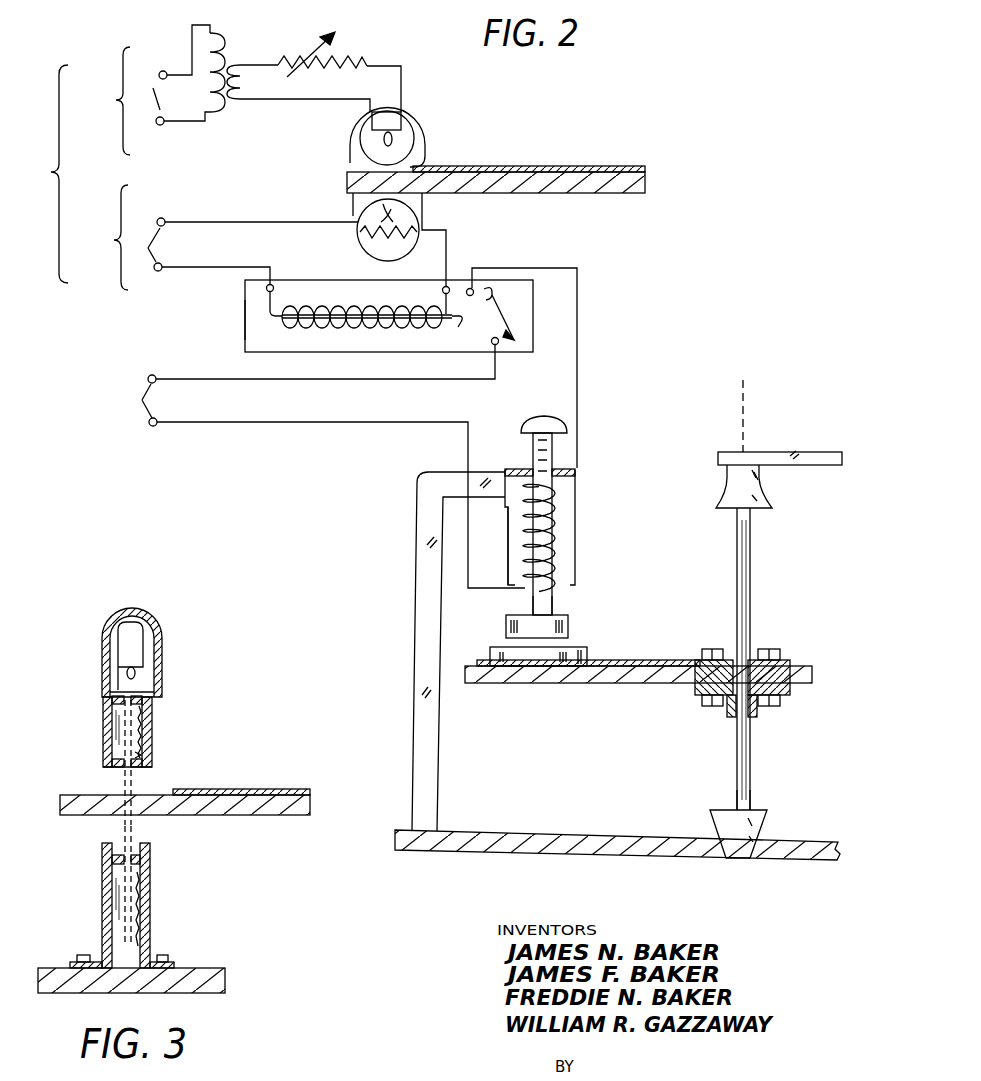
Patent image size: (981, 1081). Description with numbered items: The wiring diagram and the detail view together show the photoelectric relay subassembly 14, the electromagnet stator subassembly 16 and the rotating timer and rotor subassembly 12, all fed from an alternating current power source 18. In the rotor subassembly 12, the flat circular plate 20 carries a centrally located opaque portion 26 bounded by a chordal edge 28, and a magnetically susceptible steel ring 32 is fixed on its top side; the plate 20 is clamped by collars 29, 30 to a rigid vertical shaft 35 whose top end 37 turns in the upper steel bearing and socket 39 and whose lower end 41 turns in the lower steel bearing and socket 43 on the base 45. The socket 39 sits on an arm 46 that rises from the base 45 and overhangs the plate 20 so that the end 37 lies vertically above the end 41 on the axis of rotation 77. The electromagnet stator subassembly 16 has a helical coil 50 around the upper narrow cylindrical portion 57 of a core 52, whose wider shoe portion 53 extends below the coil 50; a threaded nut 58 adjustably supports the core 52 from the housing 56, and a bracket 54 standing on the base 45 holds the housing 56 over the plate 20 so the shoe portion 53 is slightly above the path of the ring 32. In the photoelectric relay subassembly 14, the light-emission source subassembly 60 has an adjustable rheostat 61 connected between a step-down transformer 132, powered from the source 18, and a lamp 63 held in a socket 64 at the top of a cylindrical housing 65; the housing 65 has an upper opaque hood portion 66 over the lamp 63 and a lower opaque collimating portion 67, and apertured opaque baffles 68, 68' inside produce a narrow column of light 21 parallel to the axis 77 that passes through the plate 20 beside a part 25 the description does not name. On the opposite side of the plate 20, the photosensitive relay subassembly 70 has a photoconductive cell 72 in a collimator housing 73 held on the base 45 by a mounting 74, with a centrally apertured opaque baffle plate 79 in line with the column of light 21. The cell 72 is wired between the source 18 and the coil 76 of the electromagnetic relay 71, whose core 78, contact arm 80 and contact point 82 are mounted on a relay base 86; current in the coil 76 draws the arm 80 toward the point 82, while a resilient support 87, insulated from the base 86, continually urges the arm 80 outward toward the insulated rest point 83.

In FIG. 2, the rotating timer and rotor subassembly 12 is at (585, 707).
In FIG. 2, the photoelectric relay subassembly 14 is at (48, 174).
In FIG. 2, the electromagnet stator subassembly 16 is at (604, 472).
In FIG. 2, the alternating current power source 18 is at (153, 89).
In FIG. 2, the plate 20 is at (645, 186).
In FIG. 3, the plate 20 is at (60, 804).
In FIG. 3, the column of light 21 is at (122, 782).
In FIG. 3, the plate insert 25 is at (271, 790).
In FIG. 2, the opaque portion 26 is at (539, 167).
In FIG. 2, the chordal edge 28 is at (427, 160).
In FIG. 2, the collar 29 is at (789, 632).
In FIG. 2, the collar 30 is at (695, 695).
In FIG. 2, the steel ring 32 is at (556, 655).
In FIG. 2, the shaft 35 is at (737, 612).
In FIG. 2, the top end of shaft 37 is at (752, 530).
In FIG. 2, the upper steel bearing and socket 39 is at (730, 480).
In FIG. 2, the lower end of shaft 41 is at (737, 795).
In FIG. 2, the lower steel bearing and socket 43 is at (718, 822).
In FIG. 2, the base 45 is at (590, 834).
In FIG. 3, the base 45 is at (222, 988).
In FIG. 2, the arm 46 is at (720, 452).
In FIG. 2, the helical coil 50 is at (558, 533).
In FIG. 2, the core 52 is at (550, 612).
In FIG. 2, the shoe portion 53 is at (568, 625).
In FIG. 2, the bracket 54 is at (417, 568).
In FIG. 2, the coil and core housing 56 is at (578, 505).
In FIG. 2, the upper cylindrical portion of core 57 is at (556, 499).
In FIG. 2, the threaded nut 58 is at (533, 422).
In FIG. 2, the light-emission source subassembly 60 is at (112, 101).
In FIG. 3, the light-emission source subassembly 60 is at (100, 695).
In FIG. 2, the adjustable rheostat 61 is at (366, 60).
In FIG. 2, the lamp 63 is at (403, 139).
In FIG. 3, the lamp 63 is at (127, 672).
In FIG. 2, the socket 64 is at (393, 122).
In FIG. 3, the socket 64 is at (118, 655).
In FIG. 2, the cylindrical housing 65 is at (350, 135).
In FIG. 3, the upper opaque hood portion 66 is at (157, 658).
In FIG. 3, the lower opaque collimating portion 67 is at (103, 745).
In FIG. 3, the apertured opaque baffle 68 is at (153, 731).
In FIG. 3, the apertured opaque baffle 68' is at (163, 762).
In FIG. 2, the photosensitive relay subassembly 70 is at (108, 237).
In FIG. 2, the electromagnetic relay 71 is at (244, 300).
In FIG. 2, the photoconductive cell 72 is at (359, 248).
In FIG. 3, the photoconductive cell 72 is at (120, 957).
In FIG. 2, the collimator housing 73 is at (354, 214).
In FIG. 3, the collimator housing 73 is at (145, 925).
In FIG. 3, the mounting 74 is at (168, 963).
In FIG. 2, the relay coil 76 is at (337, 305).
In FIG. 2, the axis of rotation 77 is at (748, 410).
In FIG. 2, the relay core 78 is at (460, 333).
In FIG. 3, the apertured opaque baffle plate 79 is at (140, 843).
In FIG. 2, the contact arm 80 is at (512, 318).
In FIG. 2, the contact point 82 is at (490, 348).
In FIG. 2, the insulated rest point 83 is at (519, 342).
In FIG. 2, the relay base 86 is at (245, 335).
In FIG. 2, the resilient support 87 is at (478, 288).
In FIG. 2, the step-down transformer 132 is at (217, 45).